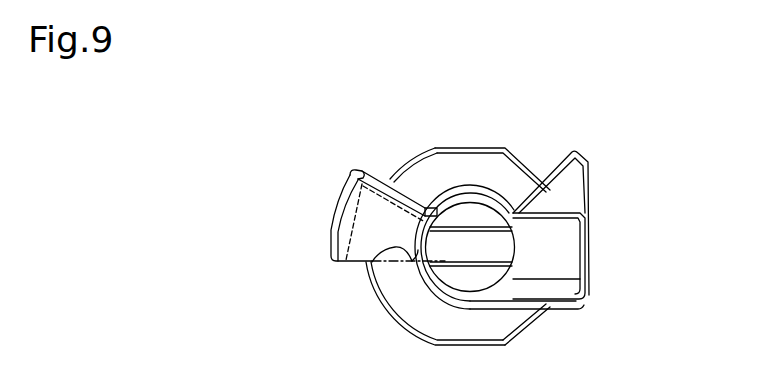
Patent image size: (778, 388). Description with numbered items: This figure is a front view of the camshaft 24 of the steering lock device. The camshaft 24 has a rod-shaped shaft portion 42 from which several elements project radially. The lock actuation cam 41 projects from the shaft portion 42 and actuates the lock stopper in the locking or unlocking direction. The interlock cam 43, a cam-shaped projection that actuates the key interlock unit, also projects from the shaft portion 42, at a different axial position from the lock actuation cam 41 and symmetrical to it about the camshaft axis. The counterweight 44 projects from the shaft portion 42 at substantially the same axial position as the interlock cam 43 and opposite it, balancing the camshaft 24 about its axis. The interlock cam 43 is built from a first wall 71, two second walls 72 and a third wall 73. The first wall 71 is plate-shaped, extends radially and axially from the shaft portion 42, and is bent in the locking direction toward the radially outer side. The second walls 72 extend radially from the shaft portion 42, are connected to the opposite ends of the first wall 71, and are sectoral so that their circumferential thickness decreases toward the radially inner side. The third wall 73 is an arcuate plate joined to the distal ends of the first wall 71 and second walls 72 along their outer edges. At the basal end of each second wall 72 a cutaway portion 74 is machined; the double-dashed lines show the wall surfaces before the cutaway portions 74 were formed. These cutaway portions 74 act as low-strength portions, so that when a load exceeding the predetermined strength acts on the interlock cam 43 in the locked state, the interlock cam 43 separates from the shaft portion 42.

The camshaft 24 is at (468, 148).
The lock actuation cam 41 is at (572, 187).
The shaft portion 42 is at (476, 283).
The interlock cam 43 is at (350, 175).
The counterweight 44 is at (568, 247).
The first wall 71 is at (380, 184).
The second walls 72 is at (360, 240).
The third wall 73 is at (338, 217).
The cutaway portion 74 is at (413, 252).